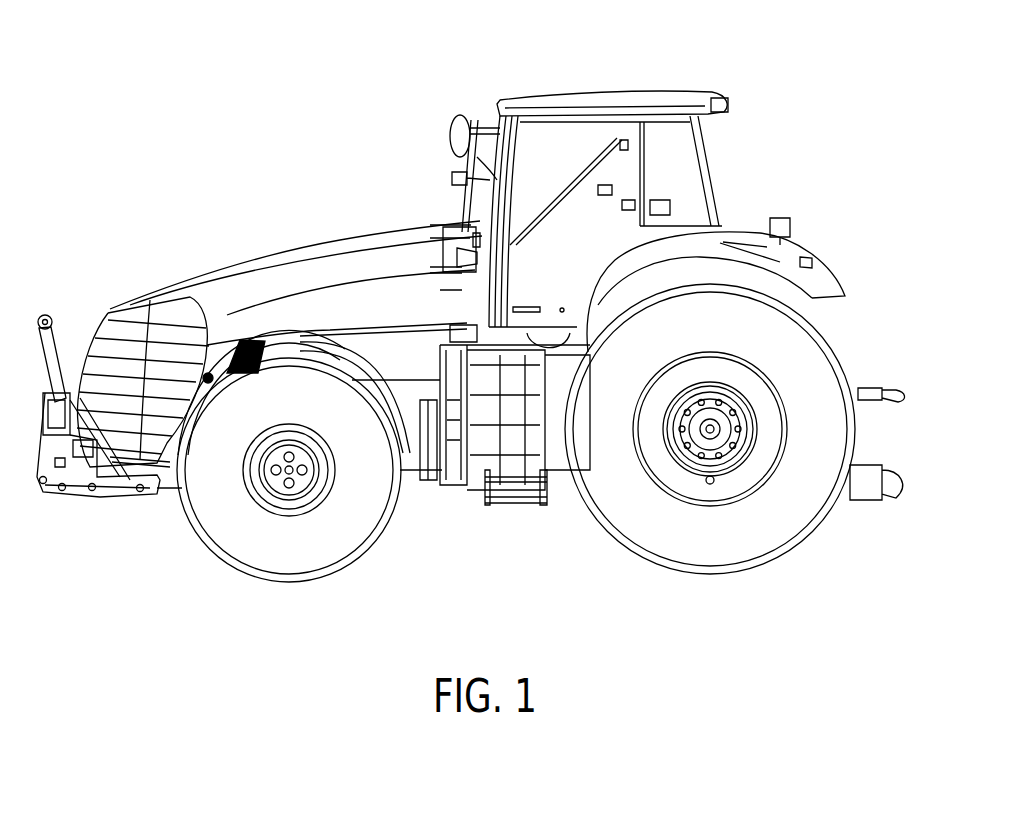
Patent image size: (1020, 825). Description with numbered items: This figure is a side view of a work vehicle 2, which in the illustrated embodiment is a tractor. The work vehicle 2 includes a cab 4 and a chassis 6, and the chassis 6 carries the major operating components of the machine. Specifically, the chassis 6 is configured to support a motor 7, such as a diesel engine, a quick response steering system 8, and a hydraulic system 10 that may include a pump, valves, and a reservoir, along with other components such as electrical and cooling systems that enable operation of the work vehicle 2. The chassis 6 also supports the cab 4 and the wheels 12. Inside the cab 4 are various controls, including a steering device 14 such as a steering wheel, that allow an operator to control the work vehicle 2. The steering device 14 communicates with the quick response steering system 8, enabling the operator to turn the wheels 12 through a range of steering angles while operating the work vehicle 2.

The work vehicle 2 is at (284, 118).
The cab 4 is at (650, 95).
The chassis 6 is at (450, 512).
The motor 7 is at (320, 243).
The quick response steering system 8 is at (402, 107).
The hydraulic system 10 is at (543, 540).
The wheels 12 is at (240, 545).
The steering device 14 is at (541, 140).